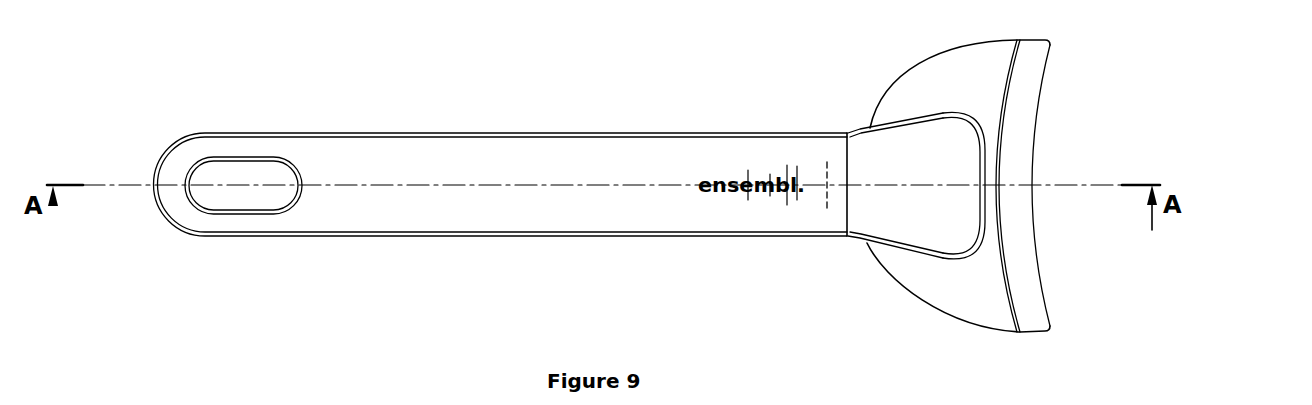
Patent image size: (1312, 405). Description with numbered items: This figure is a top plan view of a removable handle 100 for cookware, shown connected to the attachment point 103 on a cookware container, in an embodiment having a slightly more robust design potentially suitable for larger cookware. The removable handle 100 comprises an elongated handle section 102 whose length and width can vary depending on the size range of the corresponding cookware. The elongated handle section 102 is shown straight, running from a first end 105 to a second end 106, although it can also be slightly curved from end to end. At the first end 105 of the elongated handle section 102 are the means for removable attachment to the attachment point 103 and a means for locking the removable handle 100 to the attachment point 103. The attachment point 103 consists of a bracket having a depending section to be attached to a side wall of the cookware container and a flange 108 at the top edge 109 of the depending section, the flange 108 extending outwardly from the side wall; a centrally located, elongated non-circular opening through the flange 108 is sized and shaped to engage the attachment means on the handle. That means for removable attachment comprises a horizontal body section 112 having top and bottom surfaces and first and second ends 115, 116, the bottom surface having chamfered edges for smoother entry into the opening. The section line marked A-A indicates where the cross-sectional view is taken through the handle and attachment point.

The removable handle 100 is at (319, 264).
The elongated handle section 102 is at (485, 158).
The attachment point 103 is at (1100, 118).
The first end 105 is at (837, 148).
The second end 106 is at (182, 158).
The flange 108 is at (970, 77).
The top edge 109 is at (1020, 332).
The horizontal body section 112 is at (898, 220).
The first end of horizontal body section 115 is at (940, 227).
The second end of horizontal body section 116 is at (863, 220).